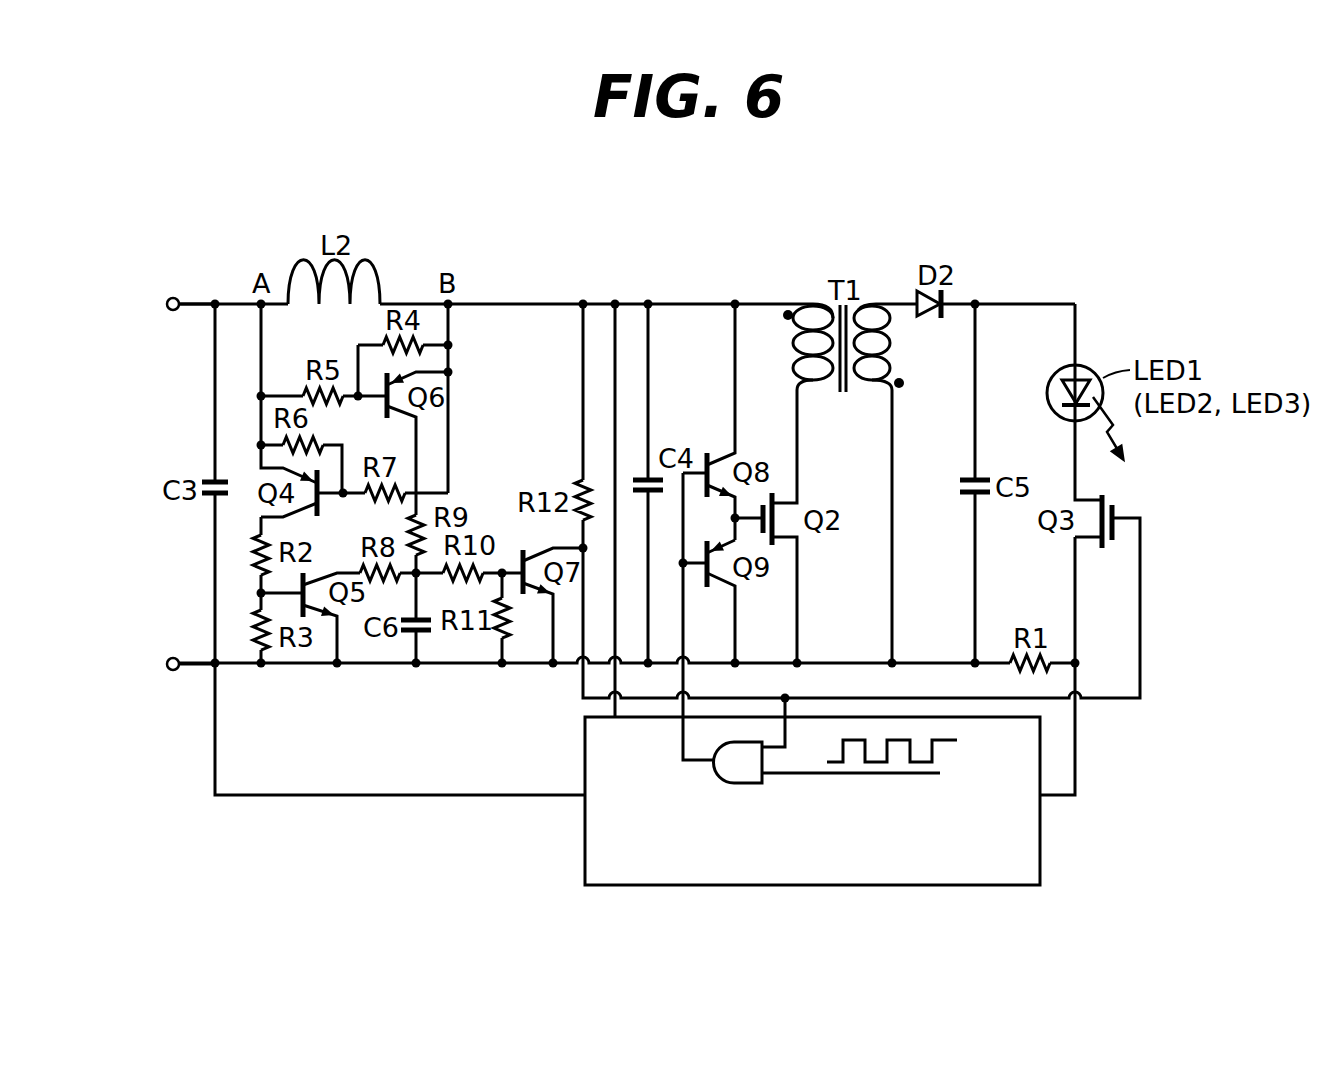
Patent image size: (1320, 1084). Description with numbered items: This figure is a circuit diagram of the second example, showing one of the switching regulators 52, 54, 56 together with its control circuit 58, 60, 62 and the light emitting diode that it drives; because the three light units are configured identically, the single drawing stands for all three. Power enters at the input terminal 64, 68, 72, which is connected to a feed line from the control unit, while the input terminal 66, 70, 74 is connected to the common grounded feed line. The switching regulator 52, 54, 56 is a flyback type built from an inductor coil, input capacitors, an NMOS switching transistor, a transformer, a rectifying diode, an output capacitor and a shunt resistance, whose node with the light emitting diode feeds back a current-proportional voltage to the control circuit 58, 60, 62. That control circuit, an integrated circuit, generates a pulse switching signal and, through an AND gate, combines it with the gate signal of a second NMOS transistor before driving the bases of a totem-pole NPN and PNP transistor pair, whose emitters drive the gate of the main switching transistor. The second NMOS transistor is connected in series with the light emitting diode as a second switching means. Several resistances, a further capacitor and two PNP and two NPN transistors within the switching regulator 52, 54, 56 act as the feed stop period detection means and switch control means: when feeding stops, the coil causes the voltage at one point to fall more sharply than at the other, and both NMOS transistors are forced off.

The switching regulator 52 is at (514, 251).
The switching regulator 54 is at (457, 304).
The switching regulator 56 is at (657, 295).
The control circuit 58 is at (922, 790).
The control circuit 60 is at (812, 790).
The control circuit 62 is at (1040, 847).
The input terminal 64 is at (243, 251).
The input terminal 68 is at (191, 304).
The input terminal 72 is at (173, 297).
The input terminal 66 is at (248, 755).
The input terminal 70 is at (191, 664).
The input terminal 74 is at (173, 671).